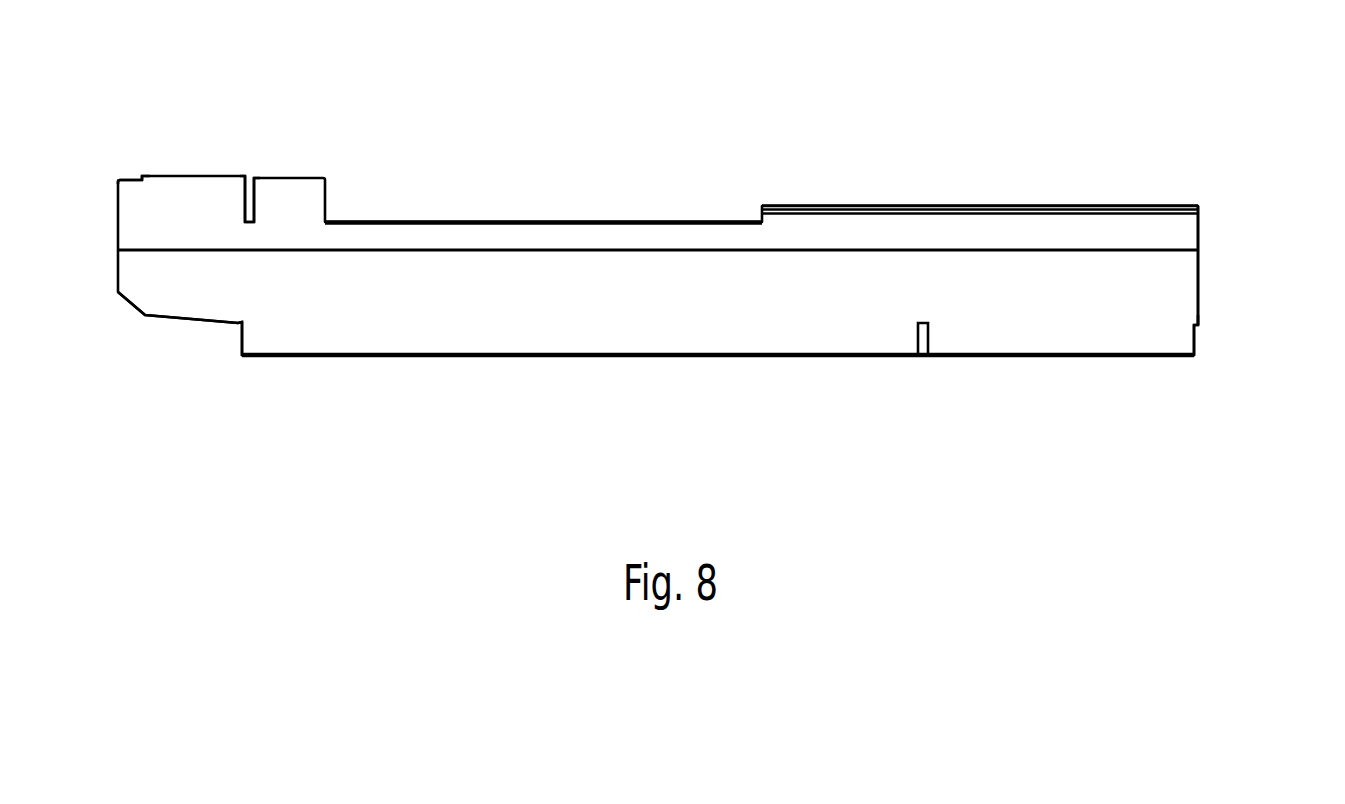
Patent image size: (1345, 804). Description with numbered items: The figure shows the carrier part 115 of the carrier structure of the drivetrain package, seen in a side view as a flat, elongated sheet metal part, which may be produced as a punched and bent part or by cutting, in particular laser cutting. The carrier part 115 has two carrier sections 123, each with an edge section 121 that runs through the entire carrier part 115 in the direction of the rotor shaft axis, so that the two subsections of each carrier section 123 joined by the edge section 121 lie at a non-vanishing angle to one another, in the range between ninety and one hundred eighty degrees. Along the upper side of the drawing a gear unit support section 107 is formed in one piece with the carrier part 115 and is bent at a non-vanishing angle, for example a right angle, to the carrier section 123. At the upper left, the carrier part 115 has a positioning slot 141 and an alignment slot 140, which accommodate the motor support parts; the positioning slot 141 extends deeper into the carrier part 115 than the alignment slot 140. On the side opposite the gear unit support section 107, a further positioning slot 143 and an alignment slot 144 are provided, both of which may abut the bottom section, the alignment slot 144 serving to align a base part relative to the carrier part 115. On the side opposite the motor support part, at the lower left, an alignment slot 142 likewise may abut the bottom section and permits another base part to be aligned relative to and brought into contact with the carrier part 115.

The gear unit support section 107 is at (845, 205).
The carrier part 115 is at (1057, 320).
The edge section 121 is at (1128, 248).
The carrier section 123 is at (1200, 287).
The alignment slot 140 is at (133, 173).
The positioning slot 141 is at (250, 184).
The alignment slot 142 is at (238, 347).
The further positioning slot 143 is at (927, 345).
The alignment slot 144 is at (1202, 338).